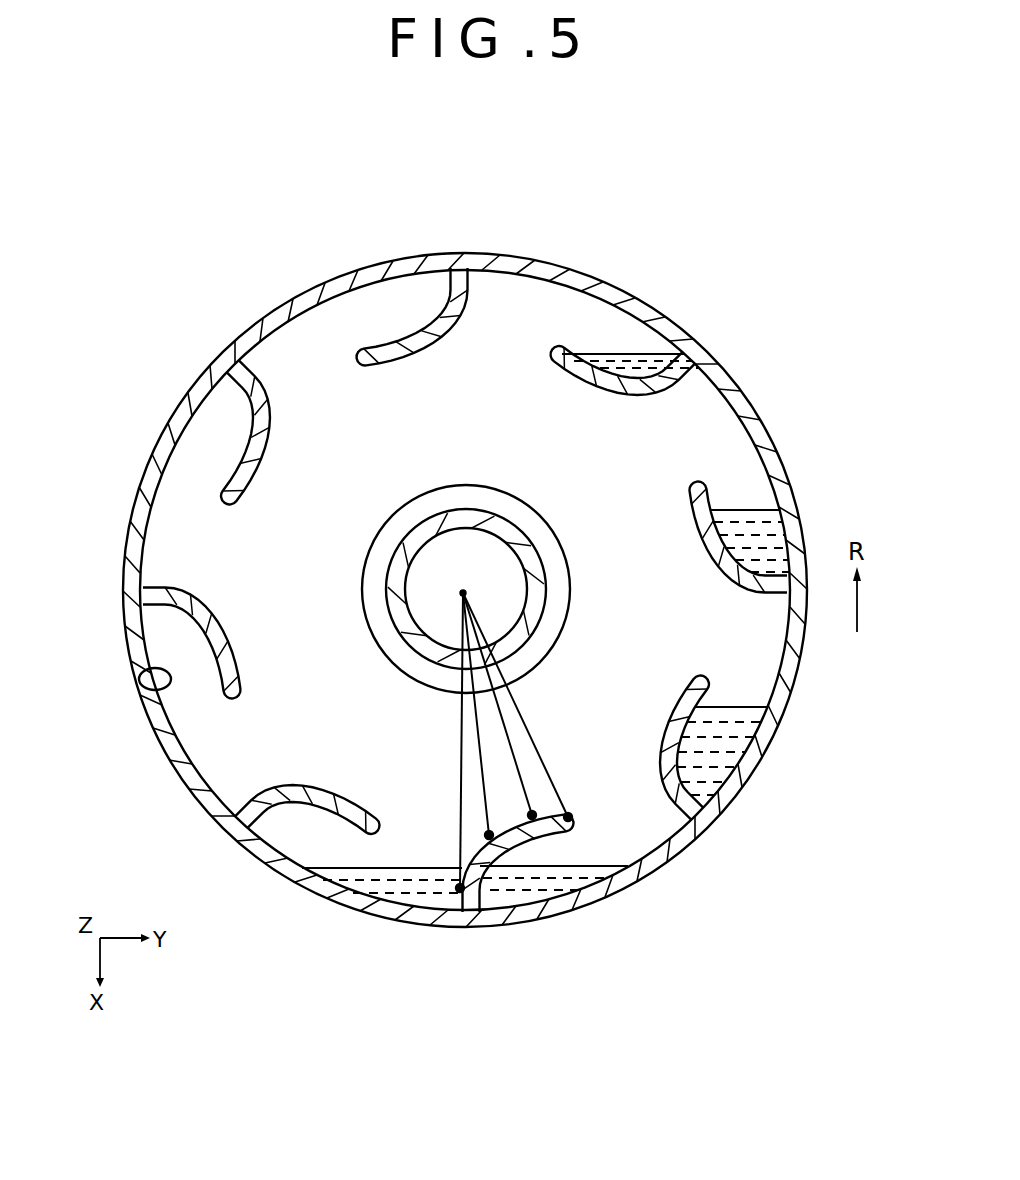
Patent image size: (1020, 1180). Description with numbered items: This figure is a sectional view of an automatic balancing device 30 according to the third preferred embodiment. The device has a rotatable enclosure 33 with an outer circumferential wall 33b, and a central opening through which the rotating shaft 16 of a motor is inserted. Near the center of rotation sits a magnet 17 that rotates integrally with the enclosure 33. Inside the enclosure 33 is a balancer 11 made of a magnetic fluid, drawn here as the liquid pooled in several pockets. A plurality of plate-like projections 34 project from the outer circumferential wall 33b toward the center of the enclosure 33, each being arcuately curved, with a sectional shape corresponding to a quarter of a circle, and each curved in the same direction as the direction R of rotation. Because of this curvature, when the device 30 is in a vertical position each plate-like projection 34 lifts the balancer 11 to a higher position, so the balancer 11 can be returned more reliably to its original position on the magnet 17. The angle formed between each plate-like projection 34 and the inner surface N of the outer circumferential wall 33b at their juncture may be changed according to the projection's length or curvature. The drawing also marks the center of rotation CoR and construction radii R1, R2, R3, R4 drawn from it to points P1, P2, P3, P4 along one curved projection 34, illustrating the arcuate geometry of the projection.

The automatic balancing device 30 is at (473, 572).
The enclosure 33 is at (634, 290).
The outer circumferential wall 33b is at (777, 452).
The plate-like projection 34 is at (730, 560).
The magnet 17 is at (542, 540).
The rotating shaft 16 is at (433, 582).
The balancer 11 is at (407, 887).
The inner surface N is at (139, 670).
The center of rotation CoR is at (463, 592).
The radius R1 is at (460, 823).
The radius R2 is at (479, 747).
The radius R3 is at (513, 752).
The radius R4 is at (514, 700).
The point P1 is at (460, 888).
The point P2 is at (489, 835).
The point P3 is at (532, 815).
The point P4 is at (568, 817).